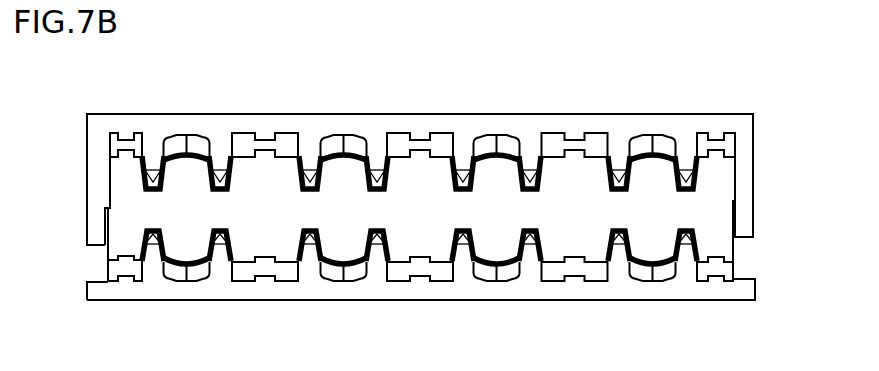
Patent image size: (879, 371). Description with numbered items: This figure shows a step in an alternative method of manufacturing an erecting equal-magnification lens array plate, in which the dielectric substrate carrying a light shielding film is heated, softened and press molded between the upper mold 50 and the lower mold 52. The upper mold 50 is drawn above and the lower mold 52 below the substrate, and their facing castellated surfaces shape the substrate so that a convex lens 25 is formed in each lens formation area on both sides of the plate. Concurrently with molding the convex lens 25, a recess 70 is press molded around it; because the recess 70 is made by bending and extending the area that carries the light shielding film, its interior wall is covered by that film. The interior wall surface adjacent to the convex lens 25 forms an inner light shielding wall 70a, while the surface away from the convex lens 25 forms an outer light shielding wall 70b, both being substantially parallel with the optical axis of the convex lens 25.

The convex lens 25 is at (415, 212).
The upper mold 50 is at (753, 178).
The lower mold 52 is at (755, 288).
The recess 70 is at (159, 190).
The inner light shielding wall 70a is at (419, 212).
The outer light shielding wall 70b is at (420, 212).